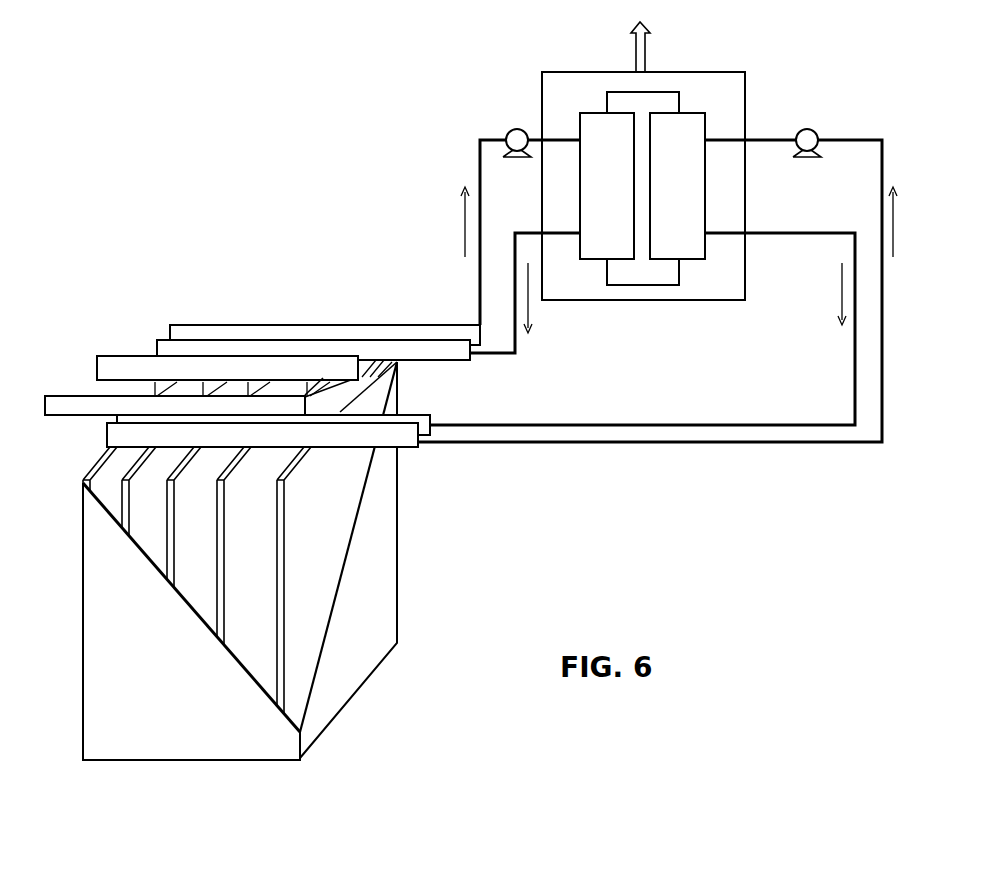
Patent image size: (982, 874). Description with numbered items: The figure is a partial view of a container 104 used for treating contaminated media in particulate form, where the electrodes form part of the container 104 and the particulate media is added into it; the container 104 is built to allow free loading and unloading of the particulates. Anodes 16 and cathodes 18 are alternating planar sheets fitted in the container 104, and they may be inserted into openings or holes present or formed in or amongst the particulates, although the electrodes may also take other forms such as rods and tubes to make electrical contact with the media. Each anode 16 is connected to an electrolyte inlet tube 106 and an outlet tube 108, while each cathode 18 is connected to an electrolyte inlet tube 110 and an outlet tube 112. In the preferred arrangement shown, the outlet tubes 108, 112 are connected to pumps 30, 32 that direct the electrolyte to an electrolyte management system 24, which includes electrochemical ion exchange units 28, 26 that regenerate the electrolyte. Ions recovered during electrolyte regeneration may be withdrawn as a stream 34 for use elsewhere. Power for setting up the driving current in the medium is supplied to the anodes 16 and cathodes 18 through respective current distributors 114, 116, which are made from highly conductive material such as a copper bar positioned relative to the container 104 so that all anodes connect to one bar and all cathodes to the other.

The anode 16 is at (122, 500).
The cathode 18 is at (167, 556).
The electrolyte management system 24 is at (567, 72).
The electrochemical ion exchange unit 26 is at (597, 192).
The electrochemical ion exchange unit 28 is at (667, 192).
The pump 30 is at (510, 132).
The pump 32 is at (814, 130).
The stream 34 is at (647, 45).
The container 104 is at (382, 592).
The electrolyte inlet tube 106 is at (415, 413).
The outlet tube 108 is at (405, 442).
The electrolyte inlet tube 110 is at (445, 352).
The outlet tube 112 is at (433, 327).
The current distributor 114 is at (43, 413).
The current distributor 116 is at (97, 370).